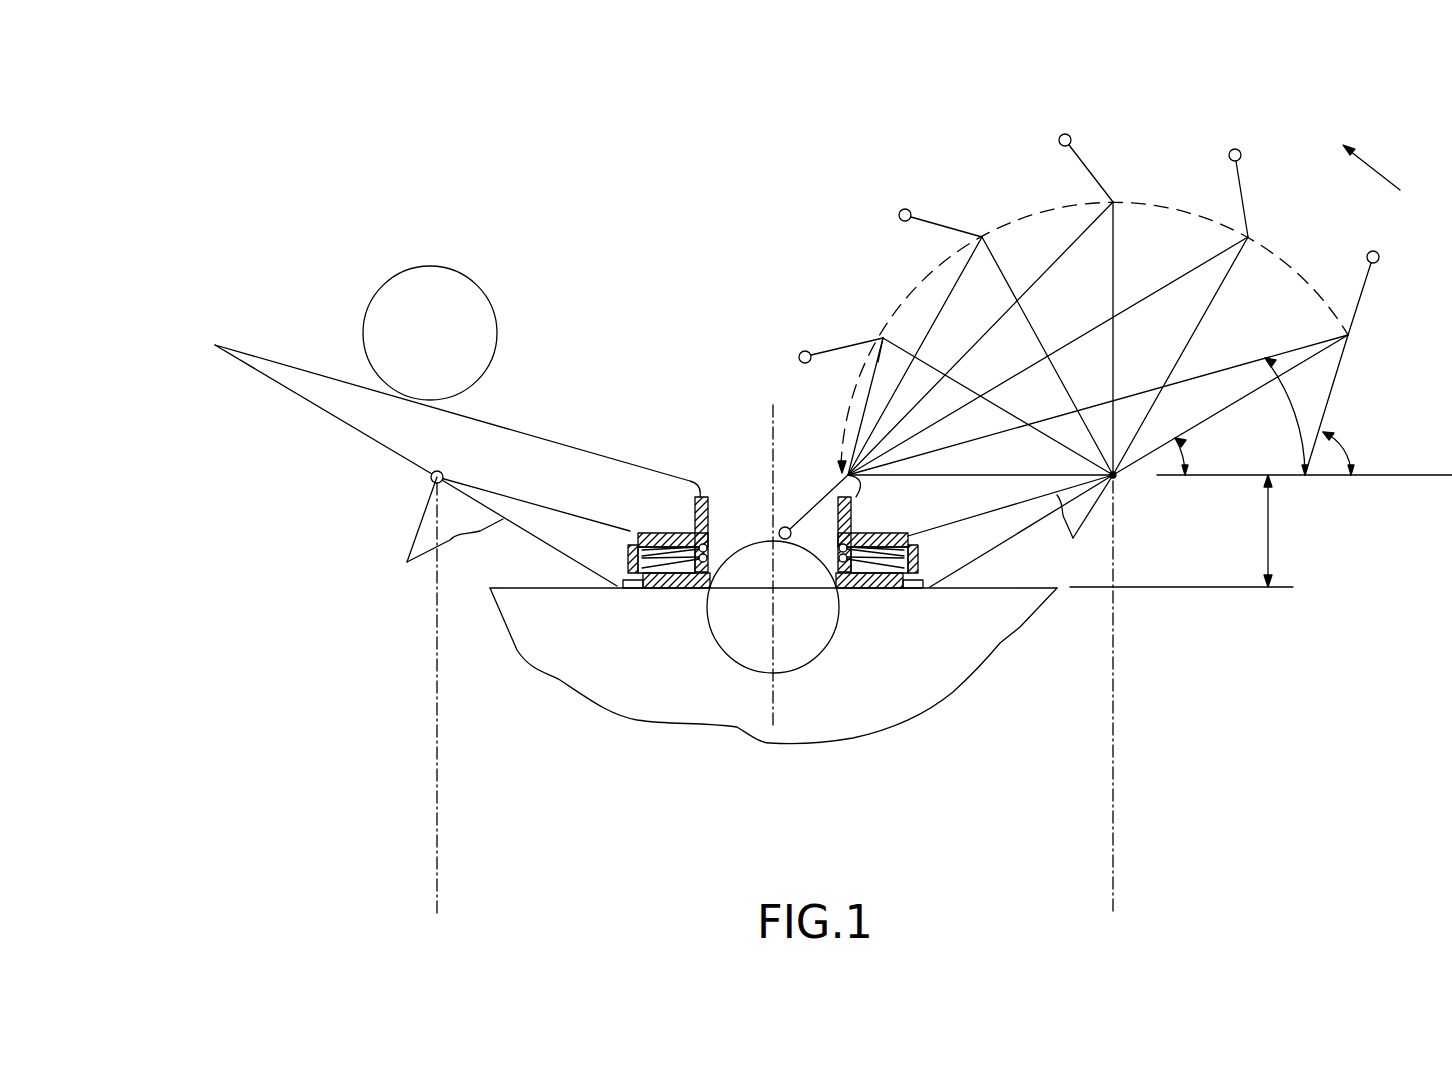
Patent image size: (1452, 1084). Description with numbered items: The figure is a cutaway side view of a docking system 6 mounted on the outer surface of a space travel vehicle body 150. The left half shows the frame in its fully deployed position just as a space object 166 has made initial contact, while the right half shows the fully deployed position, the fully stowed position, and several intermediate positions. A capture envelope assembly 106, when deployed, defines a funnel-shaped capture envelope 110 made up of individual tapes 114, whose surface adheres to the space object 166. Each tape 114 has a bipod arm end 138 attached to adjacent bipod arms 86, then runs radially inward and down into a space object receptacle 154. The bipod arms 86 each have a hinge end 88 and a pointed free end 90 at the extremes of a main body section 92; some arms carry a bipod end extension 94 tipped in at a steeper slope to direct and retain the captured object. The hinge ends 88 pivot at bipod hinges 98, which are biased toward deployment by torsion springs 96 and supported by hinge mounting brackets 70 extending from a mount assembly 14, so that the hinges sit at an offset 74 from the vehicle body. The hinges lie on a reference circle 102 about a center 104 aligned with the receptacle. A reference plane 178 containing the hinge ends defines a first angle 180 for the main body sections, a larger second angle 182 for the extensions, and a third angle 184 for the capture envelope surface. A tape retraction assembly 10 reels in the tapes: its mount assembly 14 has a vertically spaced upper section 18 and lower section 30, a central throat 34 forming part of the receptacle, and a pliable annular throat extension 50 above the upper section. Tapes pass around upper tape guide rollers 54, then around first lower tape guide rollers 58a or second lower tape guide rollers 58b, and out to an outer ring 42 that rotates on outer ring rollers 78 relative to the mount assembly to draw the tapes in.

The docking system 6 is at (758, 188).
The tape retraction assembly 10 is at (940, 543).
The mount assembly 14 is at (612, 548).
The upper section 18 is at (638, 545).
The lower section 30 is at (662, 590).
The throat 34 is at (793, 500).
The outer ring 42 is at (918, 560).
The throat extension 50 is at (695, 497).
The upper tape guide rollers 54 is at (710, 497).
The first lower tape guide rollers 58a is at (708, 540).
The second lower tape guide rollers 58b is at (706, 556).
The hinge mounting brackets 70 is at (745, 530).
The offset 74 is at (1270, 530).
The outer ring rollers 78 is at (632, 533).
The bipod arms 86 is at (305, 399).
The hinge end 88 is at (430, 483).
The free end 90 is at (215, 345).
The main body section 92 is at (1193, 440).
The bipod end extension 94 is at (818, 505).
The torsion springs 96 is at (445, 477).
The bipod hinges 98 is at (812, 491).
The reference circle 102 is at (440, 855).
The center 104 is at (777, 690).
The capture envelope assembly 106 is at (654, 408).
The capture envelope 110 is at (560, 443).
The tapes 114 is at (500, 426).
The bipod arm end 138 is at (215, 345).
The space travel vehicle body 150 is at (960, 667).
The space object receptacle 154 is at (862, 595).
The space object 166 is at (411, 348).
The reference plane 178 is at (1340, 476).
The first angle 180 is at (1182, 450).
The second angle 182 is at (1343, 455).
The third angle 184 is at (1282, 416).